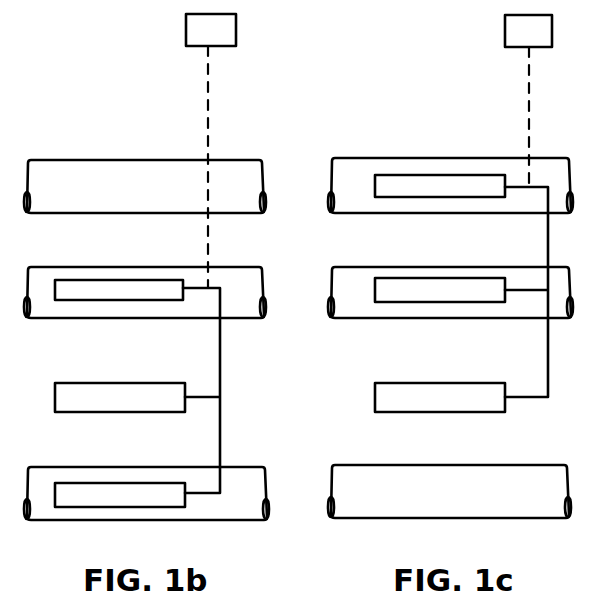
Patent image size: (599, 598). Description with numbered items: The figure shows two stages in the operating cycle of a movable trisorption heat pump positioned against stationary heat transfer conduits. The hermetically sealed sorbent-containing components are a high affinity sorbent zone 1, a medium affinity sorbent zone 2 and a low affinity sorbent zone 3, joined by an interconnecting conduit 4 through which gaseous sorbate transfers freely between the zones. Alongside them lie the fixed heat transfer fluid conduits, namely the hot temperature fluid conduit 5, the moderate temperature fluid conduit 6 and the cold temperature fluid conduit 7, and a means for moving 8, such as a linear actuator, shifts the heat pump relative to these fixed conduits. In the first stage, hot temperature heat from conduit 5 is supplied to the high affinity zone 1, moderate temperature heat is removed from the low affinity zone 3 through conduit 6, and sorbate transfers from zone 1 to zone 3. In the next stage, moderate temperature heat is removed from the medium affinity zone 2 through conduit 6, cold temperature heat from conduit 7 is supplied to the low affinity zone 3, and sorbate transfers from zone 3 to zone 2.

In FIG. 1B, the high affinity sorbent zone 1 is at (103, 483).
In FIG. 1C, the high affinity sorbent zone 1 is at (415, 383).
In FIG. 1B, the medium affinity sorbent zone 2 is at (108, 383).
In FIG. 1C, the medium affinity sorbent zone 2 is at (418, 278).
In FIG. 1B, the low affinity sorbent zone 3 is at (133, 280).
In FIG. 1C, the low affinity sorbent zone 3 is at (405, 175).
In FIG. 1B, the interconnecting conduit 4 is at (220, 425).
In FIG. 1C, the interconnecting conduit 4 is at (548, 362).
In FIG. 1B, the hot temperature fluid conduit 5 is at (265, 467).
In FIG. 1C, the hot temperature fluid conduit 5 is at (334, 515).
In FIG. 1B, the moderate temperature fluid conduit 6 is at (265, 318).
In FIG. 1C, the moderate temperature fluid conduit 6 is at (334, 267).
In FIG. 1B, the cold temperature fluid conduit 7 is at (258, 160).
In FIG. 1C, the cold temperature fluid conduit 7 is at (334, 213).
In FIG. 1B, the means for moving 8 is at (236, 32).
In FIG. 1C, the means for moving 8 is at (552, 32).